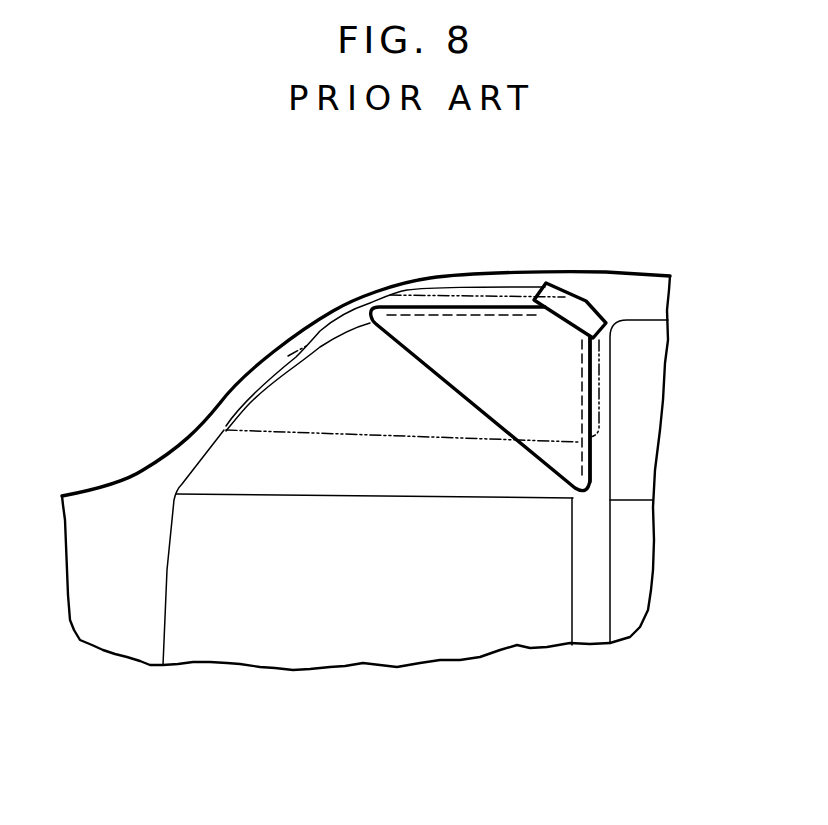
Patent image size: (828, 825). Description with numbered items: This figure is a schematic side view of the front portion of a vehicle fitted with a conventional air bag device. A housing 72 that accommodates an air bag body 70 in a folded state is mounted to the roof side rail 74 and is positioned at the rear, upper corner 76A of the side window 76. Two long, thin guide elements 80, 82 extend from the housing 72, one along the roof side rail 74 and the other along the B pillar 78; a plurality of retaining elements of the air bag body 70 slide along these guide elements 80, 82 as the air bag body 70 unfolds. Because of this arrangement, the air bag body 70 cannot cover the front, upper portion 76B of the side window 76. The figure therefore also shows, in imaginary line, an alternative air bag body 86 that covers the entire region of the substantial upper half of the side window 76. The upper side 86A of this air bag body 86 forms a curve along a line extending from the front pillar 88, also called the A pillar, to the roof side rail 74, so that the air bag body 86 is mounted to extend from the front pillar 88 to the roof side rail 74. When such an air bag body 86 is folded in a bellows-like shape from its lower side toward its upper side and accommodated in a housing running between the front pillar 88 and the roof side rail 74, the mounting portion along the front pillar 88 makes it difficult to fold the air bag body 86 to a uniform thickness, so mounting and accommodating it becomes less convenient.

The air bag body 70 is at (448, 390).
The housing 72 is at (568, 307).
The roof side rail 74 is at (482, 294).
The side window 76 is at (345, 462).
The rear, upper corner 76A is at (556, 343).
The front, upper portion 76B is at (356, 404).
The B pillar 78 is at (600, 410).
The guide element 80 is at (425, 313).
The guide element 82 is at (582, 400).
The air bag body 86 is at (416, 444).
The upper side 86A is at (323, 328).
The front pillar 88 is at (221, 413).